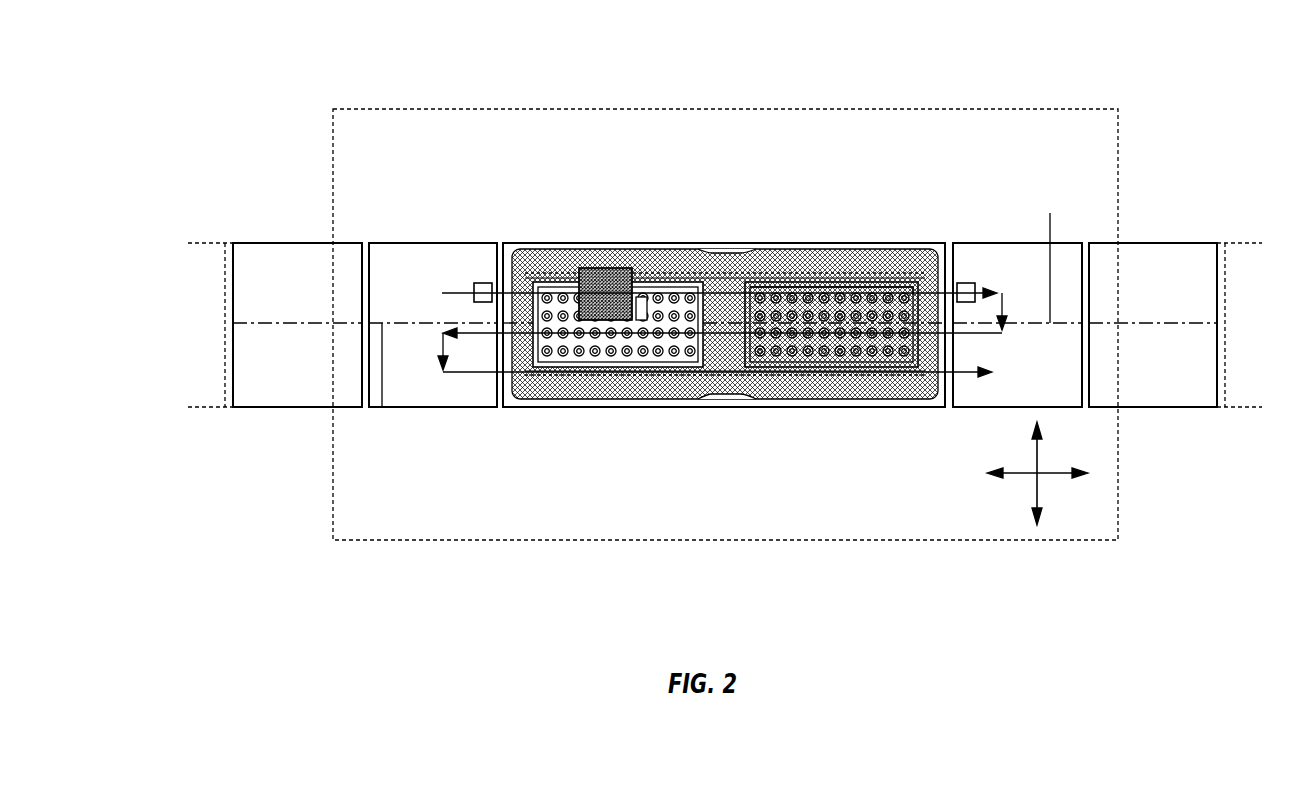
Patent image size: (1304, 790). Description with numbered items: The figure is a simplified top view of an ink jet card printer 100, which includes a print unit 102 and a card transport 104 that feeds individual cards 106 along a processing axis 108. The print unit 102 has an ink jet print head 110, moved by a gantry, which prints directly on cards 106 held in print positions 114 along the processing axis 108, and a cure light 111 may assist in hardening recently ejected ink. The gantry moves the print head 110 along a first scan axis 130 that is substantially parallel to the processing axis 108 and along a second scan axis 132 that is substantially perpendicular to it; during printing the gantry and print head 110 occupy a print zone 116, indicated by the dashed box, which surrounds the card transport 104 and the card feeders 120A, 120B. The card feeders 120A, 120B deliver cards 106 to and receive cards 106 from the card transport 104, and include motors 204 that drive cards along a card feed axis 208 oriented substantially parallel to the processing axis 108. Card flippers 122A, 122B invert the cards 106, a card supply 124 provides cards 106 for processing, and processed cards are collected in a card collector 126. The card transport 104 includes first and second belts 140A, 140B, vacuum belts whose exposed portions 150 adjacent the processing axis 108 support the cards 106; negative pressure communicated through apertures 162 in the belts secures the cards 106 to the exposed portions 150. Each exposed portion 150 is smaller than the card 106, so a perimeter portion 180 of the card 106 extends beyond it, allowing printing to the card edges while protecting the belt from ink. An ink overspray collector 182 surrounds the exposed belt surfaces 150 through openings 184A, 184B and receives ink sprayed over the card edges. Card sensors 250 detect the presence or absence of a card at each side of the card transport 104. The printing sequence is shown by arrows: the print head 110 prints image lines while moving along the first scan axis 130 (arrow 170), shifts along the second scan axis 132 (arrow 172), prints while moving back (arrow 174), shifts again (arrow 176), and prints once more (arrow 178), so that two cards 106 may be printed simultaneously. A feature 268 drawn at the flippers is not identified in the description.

The ink jet card printer 100 is at (268, 82).
The print unit 102 is at (731, 298).
The card transport 104 is at (709, 445).
The cards 106 is at (541, 408).
The processing axis 108 is at (725, 290).
The ink jet print head 110 is at (605, 268).
The cure light 111 is at (641, 297).
The print positions 114 is at (510, 246).
The print zone 116 is at (998, 109).
The card feeder 120A is at (400, 250).
The card feeder 120B is at (980, 250).
The card flipper 122A is at (268, 250).
The card flipper 122B is at (1168, 250).
The card supply 124 is at (205, 243).
The card collector 126 is at (1230, 407).
The first scan axis 130 is at (1020, 478).
The second scan axis 132 is at (1040, 458).
The first belt 140A is at (721, 321).
The second belt 140B is at (898, 368).
The exposed portion 150 is at (660, 290).
The apertures 162 is at (579, 357).
The arrow 170 is at (461, 293).
The arrow 172 is at (1002, 305).
The arrow 174 is at (985, 333).
The arrow 176 is at (443, 345).
The arrow 178 is at (483, 372).
The perimeter portion 180 is at (552, 273).
The ink overspray collector 182 is at (830, 273).
The opening 184A is at (672, 282).
The opening 184B is at (815, 286).
The motors 204 is at (510, 450).
The card feed axis 208 is at (382, 407).
The card sensors 250 is at (483, 283).
The boot axis 268 is at (275, 323).